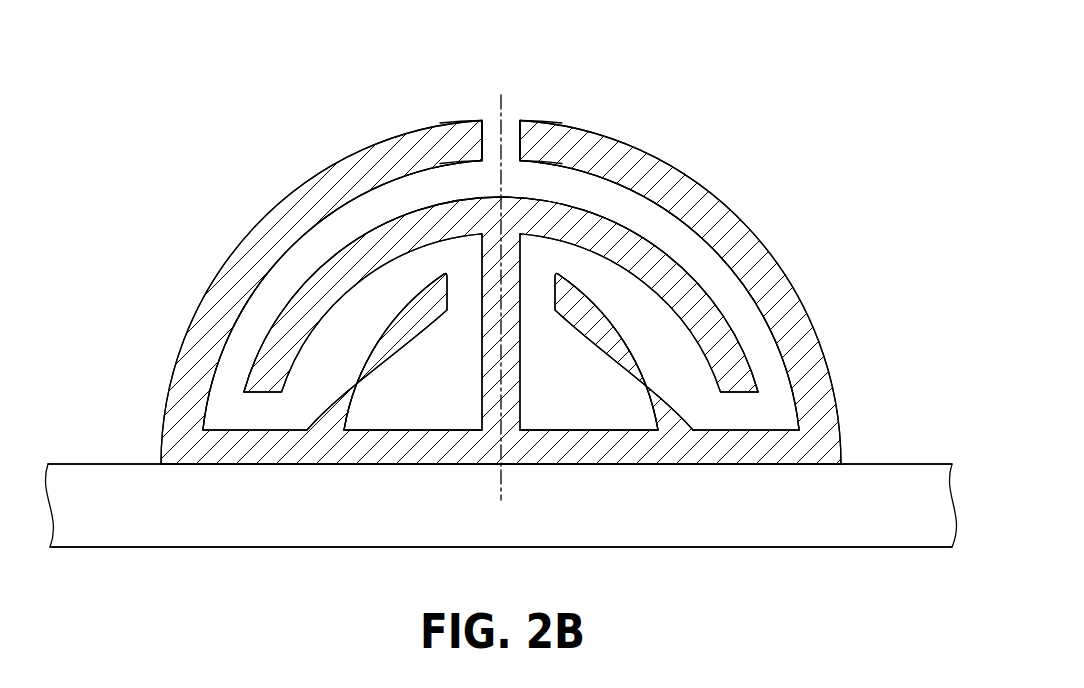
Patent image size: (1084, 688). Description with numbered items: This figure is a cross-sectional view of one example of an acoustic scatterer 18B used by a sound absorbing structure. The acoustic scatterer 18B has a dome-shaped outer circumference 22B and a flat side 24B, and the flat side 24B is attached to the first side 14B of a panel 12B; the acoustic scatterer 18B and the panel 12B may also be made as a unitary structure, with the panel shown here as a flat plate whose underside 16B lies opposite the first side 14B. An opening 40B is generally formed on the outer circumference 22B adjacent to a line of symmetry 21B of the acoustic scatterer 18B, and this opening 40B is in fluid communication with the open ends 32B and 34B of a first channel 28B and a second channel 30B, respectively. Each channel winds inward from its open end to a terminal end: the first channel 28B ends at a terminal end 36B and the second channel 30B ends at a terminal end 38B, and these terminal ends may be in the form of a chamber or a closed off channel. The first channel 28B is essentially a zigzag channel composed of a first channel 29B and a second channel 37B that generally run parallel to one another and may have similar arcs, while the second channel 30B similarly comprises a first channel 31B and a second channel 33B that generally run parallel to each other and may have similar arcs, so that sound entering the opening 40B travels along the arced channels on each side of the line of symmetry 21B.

The panel 12B is at (67, 500).
The first side 14B is at (95, 462).
The bottom surface of substrate 16B is at (127, 547).
The acoustic scatterer 18B is at (711, 108).
The line of symmetry 21B is at (497, 492).
The outer circumference 22B is at (283, 200).
The flat side 24B is at (712, 465).
The first channel 28B is at (257, 317).
The first channel 29B is at (300, 260).
The second channel 30B is at (670, 253).
The first channel 31B is at (715, 270).
The open end 32B is at (457, 183).
The second channel 33B is at (697, 367).
The open end 34B is at (550, 182).
The terminal end 36B is at (390, 407).
The second channel 37B is at (299, 358).
The terminal end 38B is at (573, 403).
The opening 40B is at (493, 137).